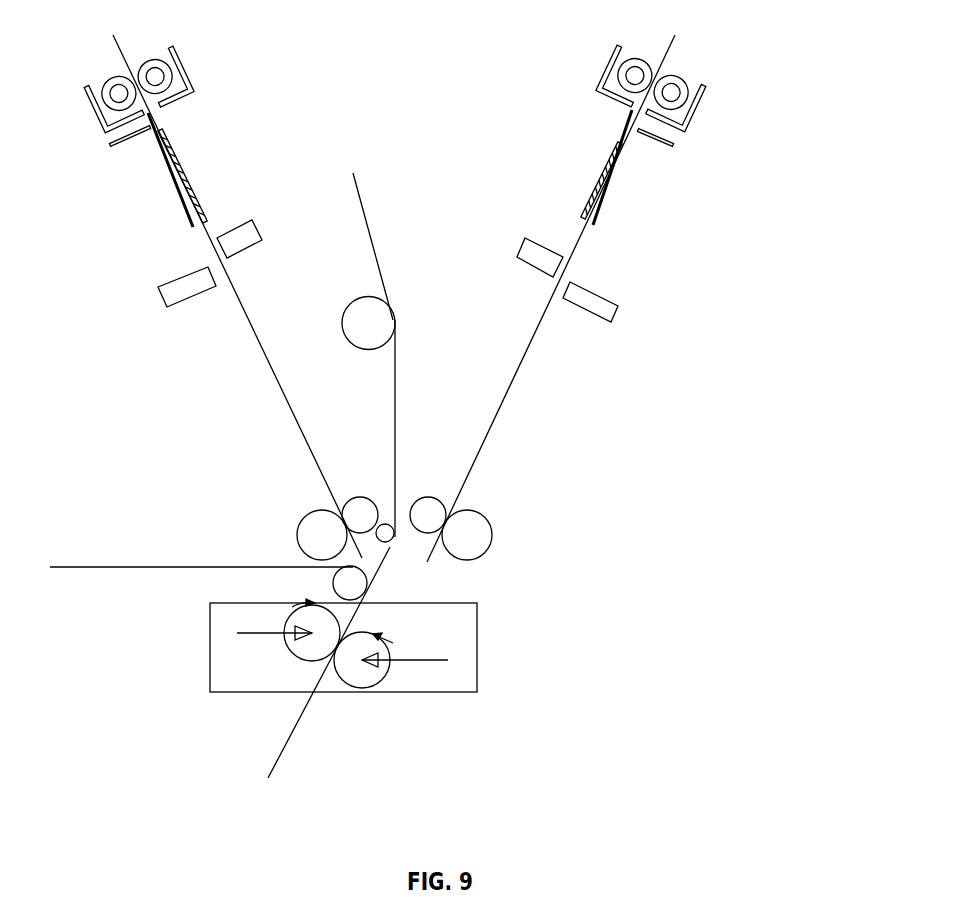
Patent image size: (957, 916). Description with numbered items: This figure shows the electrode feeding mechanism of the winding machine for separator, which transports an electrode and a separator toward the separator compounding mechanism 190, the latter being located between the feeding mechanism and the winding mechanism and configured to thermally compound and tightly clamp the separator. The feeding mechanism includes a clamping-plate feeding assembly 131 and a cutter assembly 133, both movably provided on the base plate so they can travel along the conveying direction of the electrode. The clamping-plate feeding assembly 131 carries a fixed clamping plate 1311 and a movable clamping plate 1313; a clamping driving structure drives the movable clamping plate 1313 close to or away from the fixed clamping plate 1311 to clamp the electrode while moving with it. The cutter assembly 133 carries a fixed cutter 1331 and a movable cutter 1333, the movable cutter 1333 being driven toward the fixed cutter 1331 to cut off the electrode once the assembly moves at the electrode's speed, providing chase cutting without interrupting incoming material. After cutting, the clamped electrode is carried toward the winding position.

The clamping-plate feeding assembly 131 is at (636, 178).
The fixed clamping plate 1311 is at (610, 163).
The movable clamping plate 1313 is at (640, 132).
The cutter assembly 133 is at (695, 381).
The fixed cutter 1331 is at (522, 238).
The movable cutter 1333 is at (575, 340).
The separator compounding mechanism 190 is at (468, 630).